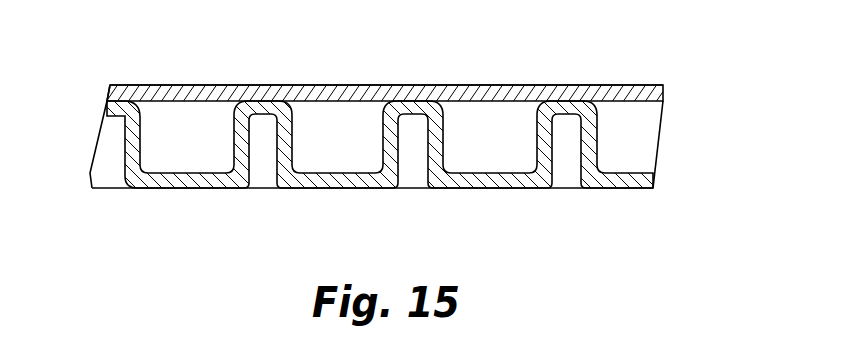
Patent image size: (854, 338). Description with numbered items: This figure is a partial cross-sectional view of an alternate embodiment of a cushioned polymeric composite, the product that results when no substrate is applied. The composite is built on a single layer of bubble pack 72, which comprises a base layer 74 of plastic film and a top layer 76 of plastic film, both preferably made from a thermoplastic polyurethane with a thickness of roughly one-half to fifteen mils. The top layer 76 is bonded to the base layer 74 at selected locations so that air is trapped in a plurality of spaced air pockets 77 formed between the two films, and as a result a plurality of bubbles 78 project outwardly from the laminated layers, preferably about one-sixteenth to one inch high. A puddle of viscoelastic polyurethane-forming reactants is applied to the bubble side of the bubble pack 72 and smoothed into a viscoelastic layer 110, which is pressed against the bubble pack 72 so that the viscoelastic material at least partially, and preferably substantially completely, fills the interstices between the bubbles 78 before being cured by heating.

The bubble pack 72 is at (354, 52).
The base layer 74 is at (183, 85).
The top layer 76 is at (110, 113).
The air pockets 77 is at (386, 59).
The bubbles 78 is at (120, 205).
The viscoelastic layer 110 is at (568, 148).